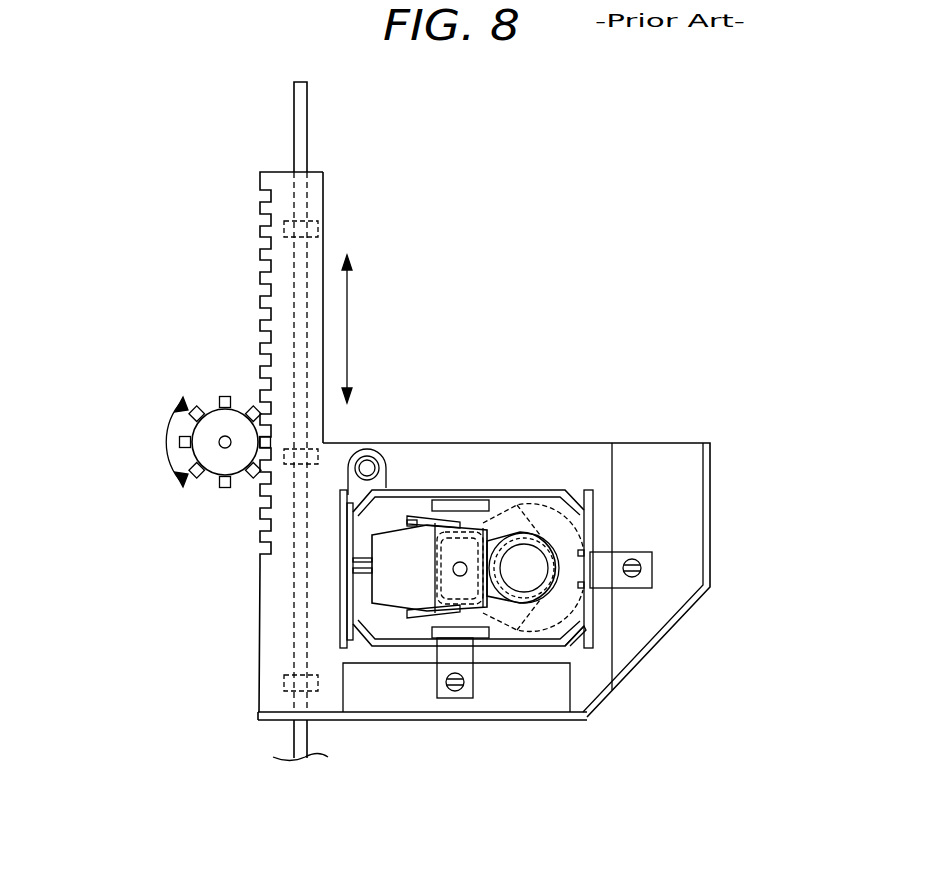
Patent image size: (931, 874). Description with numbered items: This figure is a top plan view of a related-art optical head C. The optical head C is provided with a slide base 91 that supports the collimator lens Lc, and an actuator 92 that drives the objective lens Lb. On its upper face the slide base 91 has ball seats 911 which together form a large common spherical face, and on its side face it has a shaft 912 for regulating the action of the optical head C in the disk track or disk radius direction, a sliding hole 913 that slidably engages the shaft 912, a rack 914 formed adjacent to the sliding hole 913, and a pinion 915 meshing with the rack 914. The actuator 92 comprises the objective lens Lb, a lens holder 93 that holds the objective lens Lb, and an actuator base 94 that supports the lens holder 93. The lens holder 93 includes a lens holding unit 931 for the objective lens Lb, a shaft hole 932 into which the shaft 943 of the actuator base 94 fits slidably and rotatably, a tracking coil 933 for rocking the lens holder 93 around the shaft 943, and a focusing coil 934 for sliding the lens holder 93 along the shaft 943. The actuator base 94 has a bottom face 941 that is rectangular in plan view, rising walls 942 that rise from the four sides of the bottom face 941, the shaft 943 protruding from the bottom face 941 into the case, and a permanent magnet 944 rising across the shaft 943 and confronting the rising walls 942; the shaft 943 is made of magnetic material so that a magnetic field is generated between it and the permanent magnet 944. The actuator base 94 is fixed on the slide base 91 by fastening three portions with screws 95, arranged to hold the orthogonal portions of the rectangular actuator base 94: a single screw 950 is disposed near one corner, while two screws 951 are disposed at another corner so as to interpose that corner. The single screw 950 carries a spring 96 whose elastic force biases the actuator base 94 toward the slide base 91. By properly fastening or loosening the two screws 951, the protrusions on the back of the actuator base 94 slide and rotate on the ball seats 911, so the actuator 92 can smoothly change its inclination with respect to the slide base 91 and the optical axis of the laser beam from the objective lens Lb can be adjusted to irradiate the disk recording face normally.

The optical head C is at (141, 177).
The slide base 91 is at (325, 182).
The ball seats 911 is at (262, 695).
The shaft 912 is at (295, 158).
The sliding hole 913 is at (318, 229).
The rack 914 is at (263, 262).
The pinion 915 is at (222, 437).
The actuator 92 is at (404, 484).
The lens holder 93 is at (397, 607).
The lens holding unit 931 is at (387, 577).
The shaft hole 932 is at (480, 500).
The tracking coil 933 is at (430, 622).
The focusing coil 934 is at (440, 488).
The actuator base 94 is at (558, 490).
The bottom face 941 is at (573, 502).
The rising walls 942 is at (578, 628).
The shaft 943 is at (463, 600).
The permanent magnet 944 is at (468, 500).
The screws 95 is at (357, 478).
The screw 950 is at (357, 478).
The screws 951 is at (455, 692).
The spring 96 is at (350, 485).
The collimator lens Lc is at (583, 512).
The objective lens Lb is at (530, 567).